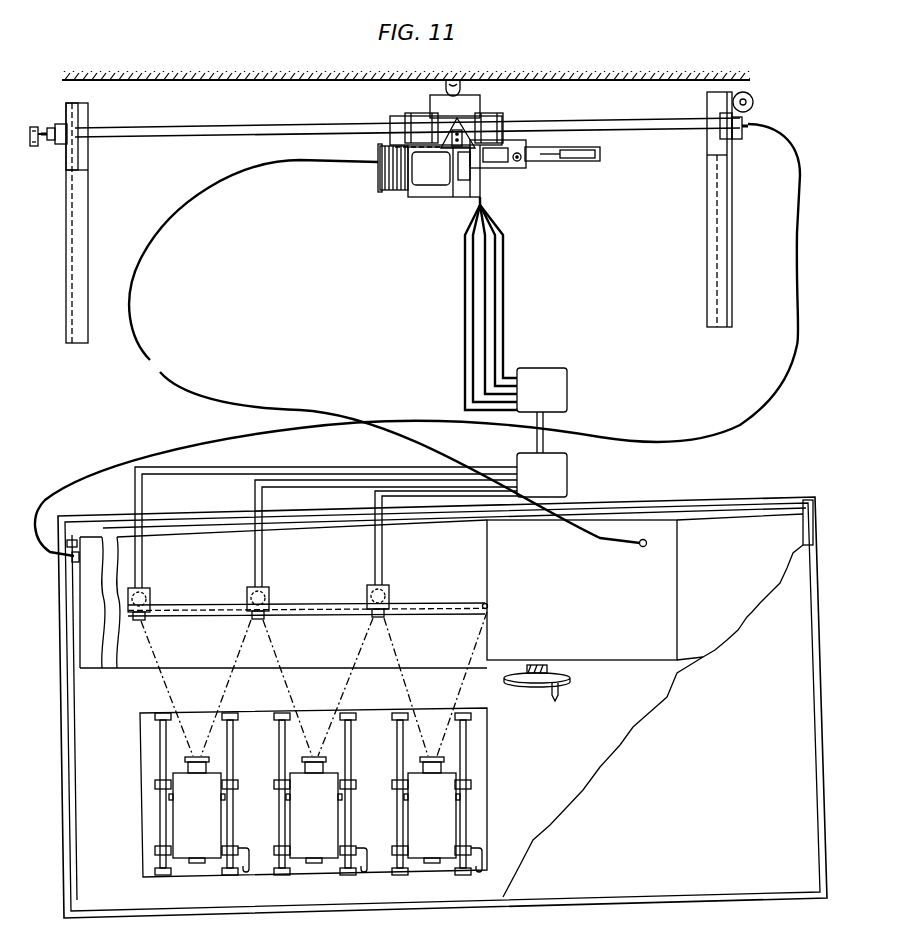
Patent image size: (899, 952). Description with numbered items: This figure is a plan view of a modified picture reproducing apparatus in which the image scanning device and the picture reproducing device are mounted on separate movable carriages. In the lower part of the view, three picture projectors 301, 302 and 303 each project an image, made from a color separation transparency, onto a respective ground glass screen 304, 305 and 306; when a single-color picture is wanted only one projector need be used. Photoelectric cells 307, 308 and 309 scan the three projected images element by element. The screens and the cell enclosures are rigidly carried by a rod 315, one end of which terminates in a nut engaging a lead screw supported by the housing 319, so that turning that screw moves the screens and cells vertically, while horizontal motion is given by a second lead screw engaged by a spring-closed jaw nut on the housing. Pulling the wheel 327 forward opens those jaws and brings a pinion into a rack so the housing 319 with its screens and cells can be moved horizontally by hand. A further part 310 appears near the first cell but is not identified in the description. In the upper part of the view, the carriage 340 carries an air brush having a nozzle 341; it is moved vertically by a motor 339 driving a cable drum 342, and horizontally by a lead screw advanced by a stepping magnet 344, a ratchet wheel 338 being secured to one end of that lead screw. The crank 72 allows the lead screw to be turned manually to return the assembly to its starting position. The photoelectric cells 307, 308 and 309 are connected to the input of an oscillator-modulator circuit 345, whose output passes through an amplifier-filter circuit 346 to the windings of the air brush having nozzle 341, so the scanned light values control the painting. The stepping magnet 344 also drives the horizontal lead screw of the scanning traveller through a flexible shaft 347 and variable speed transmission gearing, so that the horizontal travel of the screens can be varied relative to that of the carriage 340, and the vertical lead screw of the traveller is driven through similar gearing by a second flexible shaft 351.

The crank 72 is at (27, 128).
The picture projector 301 is at (201, 850).
The picture projector 302 is at (318, 850).
The picture projector 303 is at (434, 850).
The ground glass screen 304 is at (188, 610).
The ground glass screen 305 is at (316, 611).
The ground glass screen 306 is at (428, 608).
The photoelectric cell 307 is at (150, 594).
The photoelectric cell 308 is at (270, 592).
The photoelectric cell 309 is at (389, 592).
The nozzle 310 is at (150, 604).
The rod 315 is at (478, 610).
The housing 319 is at (678, 577).
The wheel 327 is at (529, 686).
The ratchet wheel 338 is at (741, 140).
The motor 339 is at (424, 184).
The carriage 340 is at (481, 109).
The nozzle 341 is at (462, 92).
The cable drum 342 is at (386, 186).
The stepping magnet 344 is at (753, 96).
The oscillator-modulator circuit 345 is at (568, 472).
The amplifier-filter circuit 346 is at (568, 388).
The flexible shaft 347 is at (791, 244).
The flexible shaft 351 is at (152, 352).